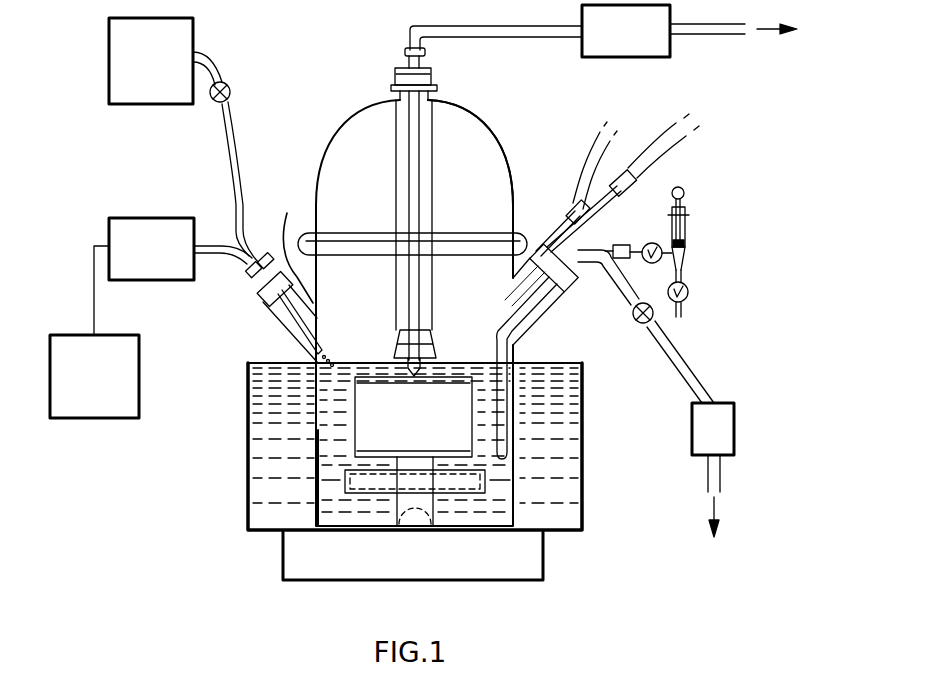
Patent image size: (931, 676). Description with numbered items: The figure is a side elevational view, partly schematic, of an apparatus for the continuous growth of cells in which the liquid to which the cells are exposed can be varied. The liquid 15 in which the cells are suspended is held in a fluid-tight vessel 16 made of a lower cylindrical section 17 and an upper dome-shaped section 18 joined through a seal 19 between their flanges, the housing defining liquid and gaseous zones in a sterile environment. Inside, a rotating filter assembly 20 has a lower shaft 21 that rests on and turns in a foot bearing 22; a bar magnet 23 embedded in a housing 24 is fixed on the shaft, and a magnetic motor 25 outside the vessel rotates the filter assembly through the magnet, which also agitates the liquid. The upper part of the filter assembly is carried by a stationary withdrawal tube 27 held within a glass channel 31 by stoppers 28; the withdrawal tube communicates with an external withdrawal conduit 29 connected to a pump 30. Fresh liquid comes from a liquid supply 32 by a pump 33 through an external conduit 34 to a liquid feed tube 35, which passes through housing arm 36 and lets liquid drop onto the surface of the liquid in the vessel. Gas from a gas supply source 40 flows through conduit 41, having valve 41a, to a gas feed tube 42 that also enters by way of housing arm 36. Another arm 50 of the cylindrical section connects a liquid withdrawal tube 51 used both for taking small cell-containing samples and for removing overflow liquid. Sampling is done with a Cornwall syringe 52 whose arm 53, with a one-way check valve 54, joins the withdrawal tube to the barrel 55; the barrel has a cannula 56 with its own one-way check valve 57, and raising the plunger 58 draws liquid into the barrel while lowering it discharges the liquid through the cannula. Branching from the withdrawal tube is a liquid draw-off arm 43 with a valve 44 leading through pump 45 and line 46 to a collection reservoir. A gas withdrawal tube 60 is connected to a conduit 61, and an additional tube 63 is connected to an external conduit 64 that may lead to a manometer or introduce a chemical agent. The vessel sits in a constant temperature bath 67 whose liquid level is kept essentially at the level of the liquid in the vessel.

The liquid 15 is at (332, 512).
The vessel 16 is at (355, 114).
The lower cylindrical section 17 is at (572, 420).
The upper dome-shaped section 18 is at (487, 157).
The seal 19 is at (298, 240).
The rotating filter assembly 20 is at (366, 422).
The lower shaft 21 is at (437, 500).
The foot bearing 22 is at (412, 530).
The bar magnet 23 is at (450, 482).
The housing 24 is at (425, 491).
The magnetic motor 25 is at (494, 561).
The withdrawal tube 27 is at (415, 150).
The stoppers 28 is at (431, 78).
The external withdrawal conduit 29 is at (525, 28).
The pump 30 is at (689, 31).
The glass channel 31 is at (433, 206).
The liquid supply 32 is at (94, 332).
The pump 33 is at (151, 249).
The external conduit 34 is at (207, 250).
The liquid feed tube 35 is at (290, 325).
The housing arm 36 is at (275, 308).
The gas supply source 40 is at (151, 61).
The conduit 41 is at (233, 133).
The valve 41a is at (232, 90).
The gas feed tube 42 is at (294, 246).
The liquid draw-off arm 43 is at (677, 352).
The valve 44 is at (638, 320).
The pump 45 is at (727, 433).
The line 46 is at (717, 474).
The arm 50 is at (537, 334).
The liquid withdrawal tube 51 is at (537, 314).
The Cornwall syringe 52 is at (720, 208).
The arm 53 is at (624, 245).
The one-way check valve 54 is at (652, 243).
The barrel 55 is at (688, 255).
The cannula 56 is at (685, 278).
The one-way check valve 57 is at (690, 294).
The plunger 58 is at (686, 200).
The gas withdrawal tube 60 is at (616, 167).
The conduit 61 is at (672, 130).
The additional tube 63 is at (557, 230).
The external conduit 64 is at (590, 150).
The constant temperature bath 67 is at (570, 485).